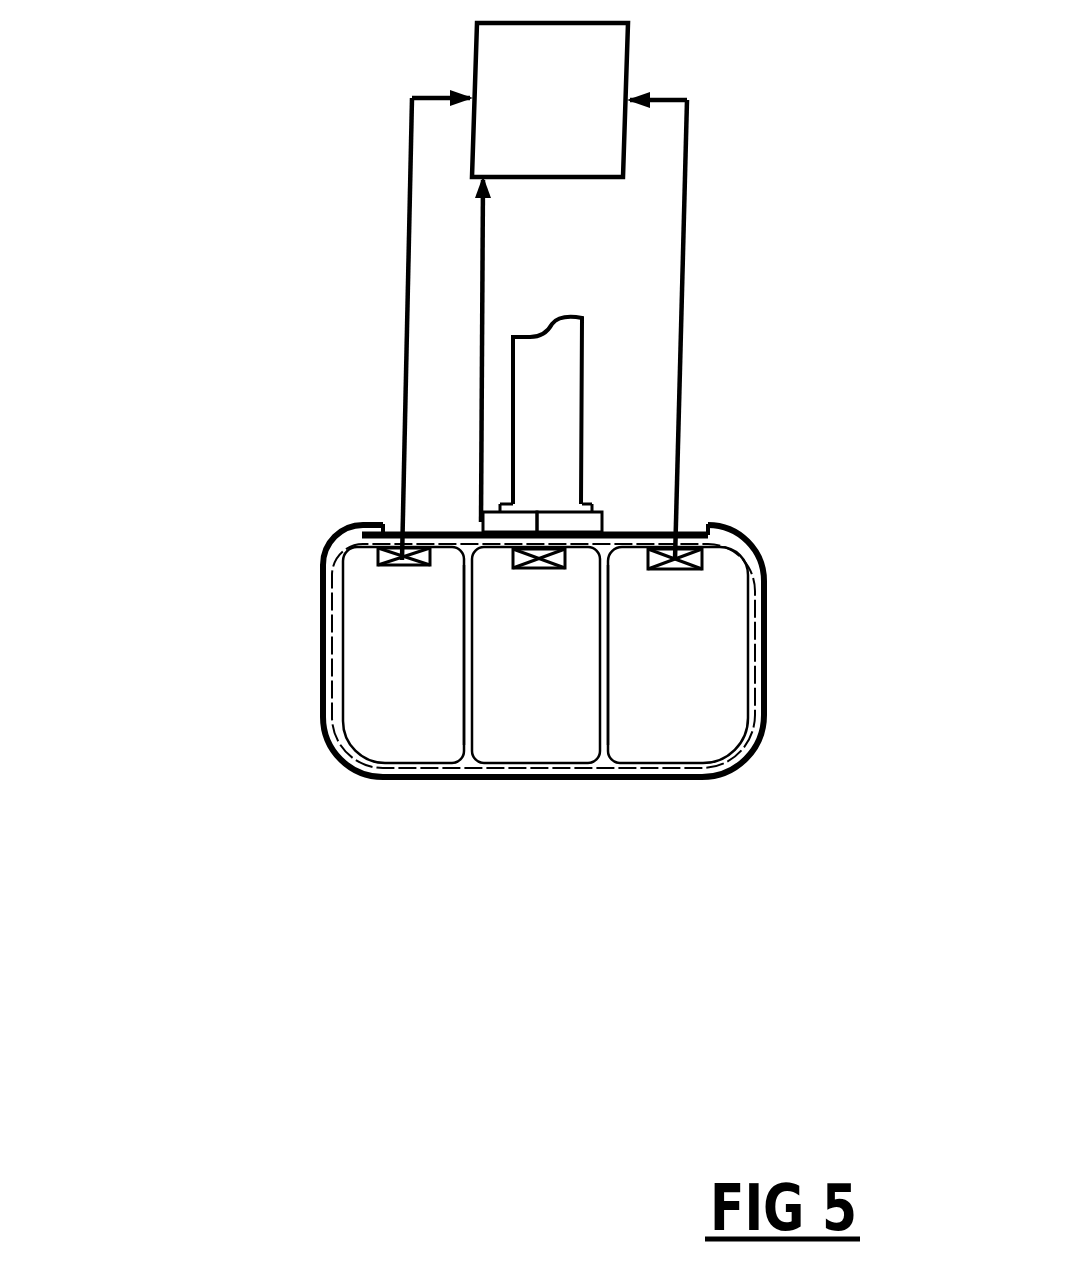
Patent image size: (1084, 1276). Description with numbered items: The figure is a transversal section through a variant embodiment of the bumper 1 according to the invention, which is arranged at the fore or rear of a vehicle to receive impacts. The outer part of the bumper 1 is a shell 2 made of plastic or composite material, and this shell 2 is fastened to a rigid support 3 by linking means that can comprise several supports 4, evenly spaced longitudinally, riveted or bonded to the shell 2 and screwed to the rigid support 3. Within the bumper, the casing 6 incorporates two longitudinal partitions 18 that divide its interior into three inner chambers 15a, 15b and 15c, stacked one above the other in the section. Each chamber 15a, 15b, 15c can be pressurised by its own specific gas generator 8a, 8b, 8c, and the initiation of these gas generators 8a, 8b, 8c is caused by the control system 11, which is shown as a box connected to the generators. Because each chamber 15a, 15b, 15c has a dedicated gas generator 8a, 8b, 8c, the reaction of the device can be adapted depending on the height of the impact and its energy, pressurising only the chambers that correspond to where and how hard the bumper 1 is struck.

The bumper 1 is at (393, 803).
The shell 2 is at (757, 748).
The rigid support 3 is at (585, 525).
The support 4 is at (432, 522).
The casing 6 is at (320, 589).
The gas generator 8a is at (683, 535).
The gas generator 8b is at (540, 562).
The gas generator 8c is at (398, 567).
The control system 11 is at (527, 80).
The inner chamber 15a is at (658, 685).
The inner chamber 15b is at (527, 720).
The inner chamber 15c is at (375, 683).
The longitudinal partition 18 is at (457, 718).